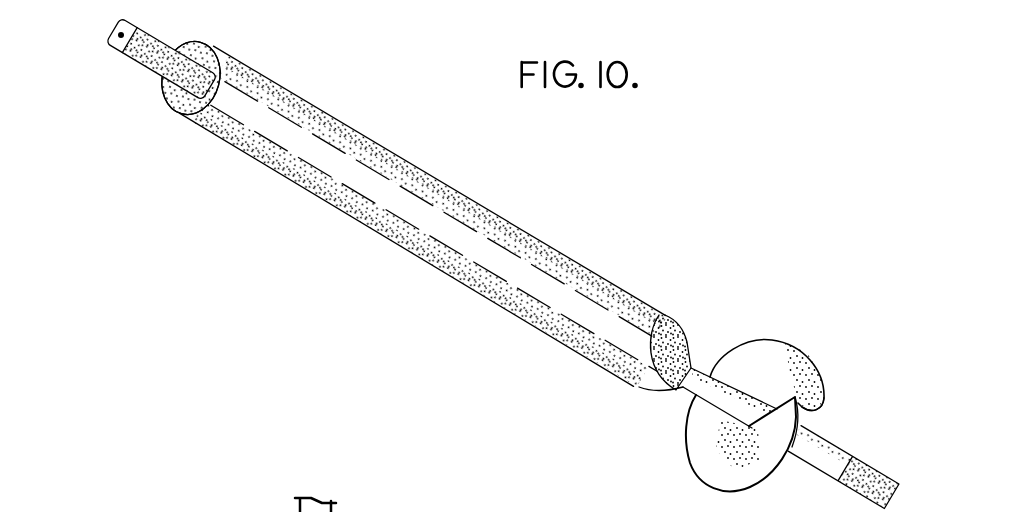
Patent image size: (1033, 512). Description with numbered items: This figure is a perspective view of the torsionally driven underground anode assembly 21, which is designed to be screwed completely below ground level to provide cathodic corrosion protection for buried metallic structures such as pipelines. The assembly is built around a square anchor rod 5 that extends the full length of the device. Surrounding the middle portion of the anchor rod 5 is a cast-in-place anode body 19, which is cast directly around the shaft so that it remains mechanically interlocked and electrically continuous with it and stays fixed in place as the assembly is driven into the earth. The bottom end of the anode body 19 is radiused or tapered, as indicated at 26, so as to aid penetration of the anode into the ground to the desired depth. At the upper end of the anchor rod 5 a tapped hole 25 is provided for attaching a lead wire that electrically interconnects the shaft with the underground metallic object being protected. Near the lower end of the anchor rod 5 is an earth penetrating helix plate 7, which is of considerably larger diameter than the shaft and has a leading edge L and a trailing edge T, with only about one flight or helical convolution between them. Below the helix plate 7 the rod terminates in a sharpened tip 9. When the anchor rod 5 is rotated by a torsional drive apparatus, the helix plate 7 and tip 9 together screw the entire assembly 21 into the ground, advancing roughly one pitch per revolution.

The tapped hole 25 is at (121, 35).
The anchor rod 5 is at (160, 58).
The torsionally driven underground anode assembly 21 is at (450, 180).
The anode body 19 is at (498, 208).
The radiused or tapered bottom end 26 is at (680, 343).
The trailing edge T is at (782, 403).
The helix plate 7 is at (783, 375).
The leading edge L is at (810, 414).
The tip 9 is at (865, 470).